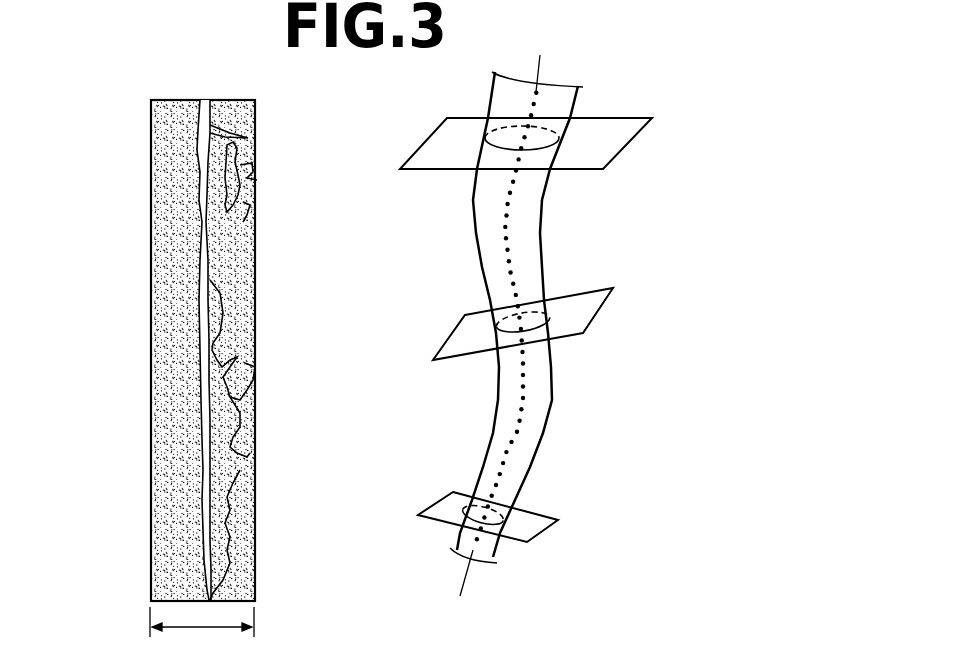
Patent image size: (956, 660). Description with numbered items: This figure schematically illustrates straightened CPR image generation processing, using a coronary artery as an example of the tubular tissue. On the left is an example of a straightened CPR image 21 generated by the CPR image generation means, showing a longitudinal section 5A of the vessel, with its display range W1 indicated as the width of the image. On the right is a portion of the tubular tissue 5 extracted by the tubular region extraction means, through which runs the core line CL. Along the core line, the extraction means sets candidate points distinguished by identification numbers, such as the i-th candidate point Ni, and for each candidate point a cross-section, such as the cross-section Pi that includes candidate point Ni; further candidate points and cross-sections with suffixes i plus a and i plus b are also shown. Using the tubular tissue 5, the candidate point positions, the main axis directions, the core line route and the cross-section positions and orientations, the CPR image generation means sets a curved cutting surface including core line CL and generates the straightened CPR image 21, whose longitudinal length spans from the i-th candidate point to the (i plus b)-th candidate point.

The straightened CPR image 21 is at (151, 141).
The longitudinal section 5A is at (200, 203).
The tubular tissue 5 is at (478, 264).
The display range W1 is at (202, 633).
The cross-section including the i-th candidate point Pi is at (522, 145).
The i-th candidate point Ni is at (522, 145).
The core line CL is at (467, 580).